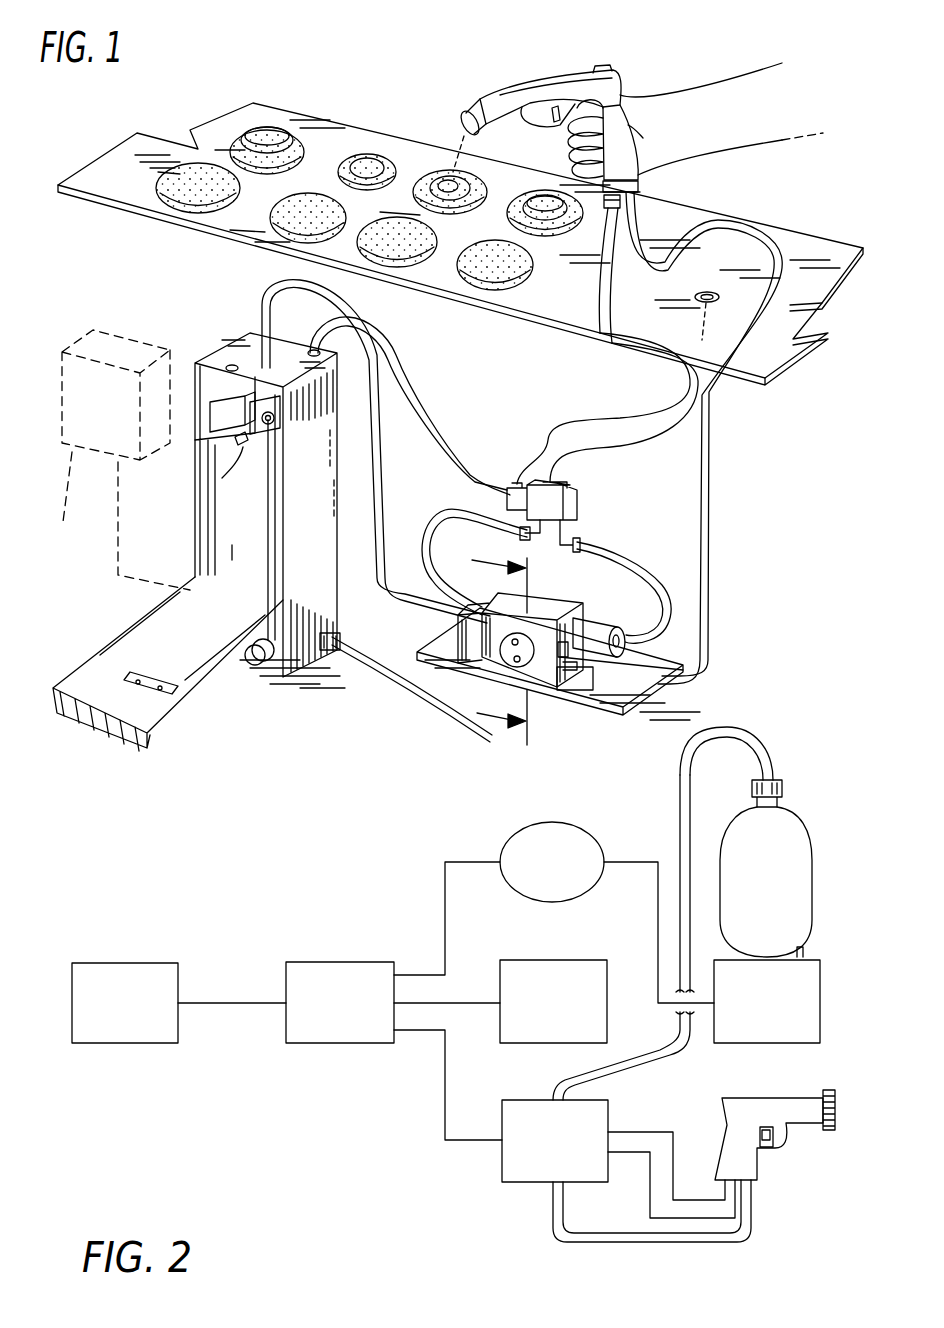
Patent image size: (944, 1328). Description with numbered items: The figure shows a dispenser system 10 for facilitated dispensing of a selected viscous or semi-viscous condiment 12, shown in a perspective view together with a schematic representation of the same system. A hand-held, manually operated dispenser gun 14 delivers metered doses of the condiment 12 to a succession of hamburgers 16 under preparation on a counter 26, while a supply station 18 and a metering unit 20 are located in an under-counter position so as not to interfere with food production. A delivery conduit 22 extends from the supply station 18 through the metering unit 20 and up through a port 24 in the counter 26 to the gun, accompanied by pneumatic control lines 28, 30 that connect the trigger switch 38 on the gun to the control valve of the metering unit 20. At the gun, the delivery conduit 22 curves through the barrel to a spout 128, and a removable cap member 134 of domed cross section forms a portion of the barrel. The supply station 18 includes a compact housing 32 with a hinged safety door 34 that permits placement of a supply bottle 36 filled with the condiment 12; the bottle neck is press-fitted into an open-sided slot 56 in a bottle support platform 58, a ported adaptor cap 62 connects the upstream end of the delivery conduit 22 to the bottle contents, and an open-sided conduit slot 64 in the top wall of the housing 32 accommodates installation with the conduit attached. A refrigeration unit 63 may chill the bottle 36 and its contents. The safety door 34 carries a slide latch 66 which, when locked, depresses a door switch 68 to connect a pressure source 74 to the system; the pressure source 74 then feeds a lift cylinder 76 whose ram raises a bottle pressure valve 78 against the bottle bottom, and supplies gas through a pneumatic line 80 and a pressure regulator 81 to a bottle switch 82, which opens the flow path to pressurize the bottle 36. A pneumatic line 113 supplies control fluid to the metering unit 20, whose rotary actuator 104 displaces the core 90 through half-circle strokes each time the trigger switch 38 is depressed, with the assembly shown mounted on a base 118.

In FIG. 1, the dispenser system 10 is at (252, 777).
In FIG. 1, the condiment 12 is at (450, 172).
In FIG. 1, the dispenser gun 14 is at (630, 122).
In FIG. 2, the dispenser gun 14 is at (748, 1123).
In FIG. 1, the hamburgers 16 is at (283, 130).
In FIG. 1, the supply station 18 is at (199, 522).
In FIG. 2, the supply station 18 is at (771, 817).
In FIG. 1, the metering unit 20 is at (603, 600).
In FIG. 2, the metering unit 20 is at (502, 1152).
In FIG. 1, the delivery conduit 22 is at (640, 197).
In FIG. 2, the delivery conduit 22 is at (680, 780).
In FIG. 1, the port 24 is at (700, 296).
In FIG. 1, the counter 26 is at (778, 235).
In FIG. 1, the pneumatic control line 28 is at (588, 450).
In FIG. 2, the pneumatic control line 28 is at (680, 1160).
In FIG. 1, the pneumatic control line 30 is at (560, 425).
In FIG. 2, the pneumatic control line 30 is at (650, 1190).
In FIG. 1, the housing 32 is at (305, 672).
In FIG. 1, the safety door 34 is at (168, 669).
In FIG. 1, the supply bottle 36 is at (232, 518).
In FIG. 2, the supply bottle 36 is at (782, 818).
In FIG. 1, the trigger switch 38 is at (553, 118).
In FIG. 2, the trigger switch 38 is at (772, 1140).
In FIG. 1, the open-sided slot 56 is at (243, 447).
In FIG. 1, the bottle support platform 58 is at (227, 418).
In FIG. 1, the adaptor cap 62 is at (235, 437).
In FIG. 1, the refrigeration unit 63 is at (119, 460).
In FIG. 1, the conduit slot 64 is at (232, 366).
In FIG. 1, the slide latch 66 is at (158, 686).
In FIG. 1, the door switch 68 is at (272, 428).
In FIG. 2, the door switch 68 is at (352, 1045).
In FIG. 2, the pressure source 74 is at (115, 1045).
In FIG. 2, the lift cylinder 76 is at (547, 960).
In FIG. 2, the bottle pressure valve 78 is at (818, 1028).
In FIG. 2, the pneumatic line 80 is at (623, 860).
In FIG. 2, the pressure regulator 81 is at (503, 842).
In FIG. 2, the bottle switch 82 is at (803, 950).
In FIG. 1, the rotary core 90 is at (505, 655).
In FIG. 1, the rotary actuator 104 is at (600, 608).
In FIG. 1, the pneumatic line 113 is at (453, 420).
In FIG. 2, the pneumatic line 113 is at (445, 1085).
In FIG. 1, the base plate 118 is at (660, 683).
In FIG. 1, the spout 128 is at (478, 110).
In FIG. 1, the cap member 134 is at (545, 78).